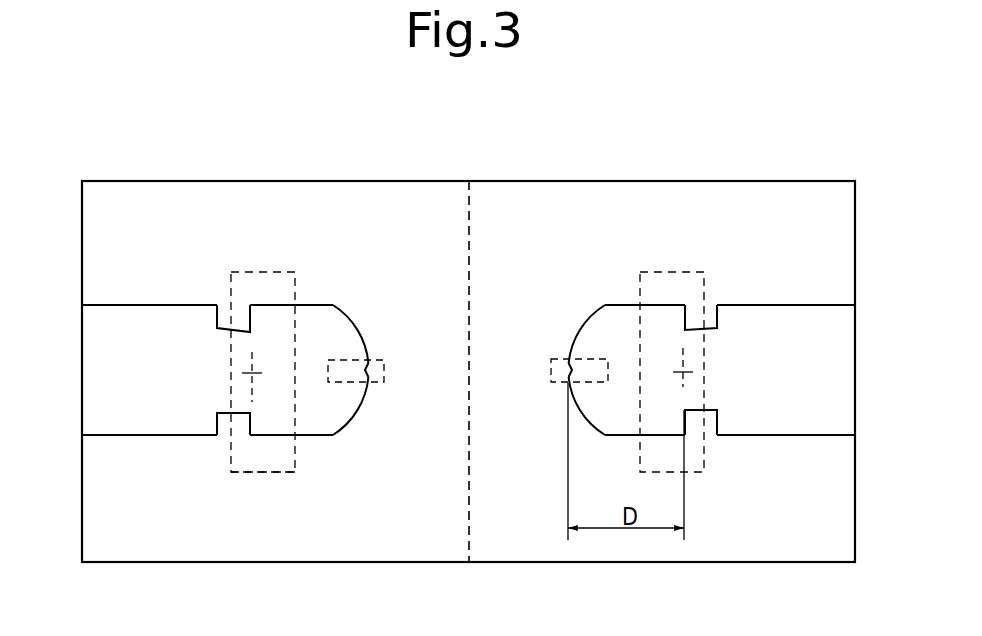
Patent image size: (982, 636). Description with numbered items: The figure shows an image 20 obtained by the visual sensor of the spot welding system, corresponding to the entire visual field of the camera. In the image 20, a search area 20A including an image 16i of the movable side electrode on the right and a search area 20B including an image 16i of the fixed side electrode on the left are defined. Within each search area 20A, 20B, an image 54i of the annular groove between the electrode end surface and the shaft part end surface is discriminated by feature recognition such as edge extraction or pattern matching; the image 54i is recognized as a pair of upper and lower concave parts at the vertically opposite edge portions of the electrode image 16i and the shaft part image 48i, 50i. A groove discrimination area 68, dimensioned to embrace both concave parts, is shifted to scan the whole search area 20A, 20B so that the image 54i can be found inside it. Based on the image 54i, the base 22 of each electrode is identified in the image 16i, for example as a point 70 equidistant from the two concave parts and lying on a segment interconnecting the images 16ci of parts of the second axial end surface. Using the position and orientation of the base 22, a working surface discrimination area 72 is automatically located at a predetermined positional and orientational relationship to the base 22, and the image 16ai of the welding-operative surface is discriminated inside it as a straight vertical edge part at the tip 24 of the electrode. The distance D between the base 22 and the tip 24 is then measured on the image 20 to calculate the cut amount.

The image 20 is at (672, 175).
The search area 20A is at (802, 208).
The search area 20B is at (180, 200).
The image of shaft part 50i is at (143, 323).
The image of shaft part 48i is at (798, 422).
The image of electrode 16i is at (332, 297).
The image of welding-operative surface 16ai is at (369, 378).
The image of part of second axial end surface 16ci is at (250, 325).
The image of annular groove 54i is at (239, 424).
The base 22 is at (258, 363).
The tip 24 is at (369, 365).
The point 70 is at (247, 375).
The working surface discrimination area 72 is at (384, 367).
The groove discrimination area 68 is at (275, 460).